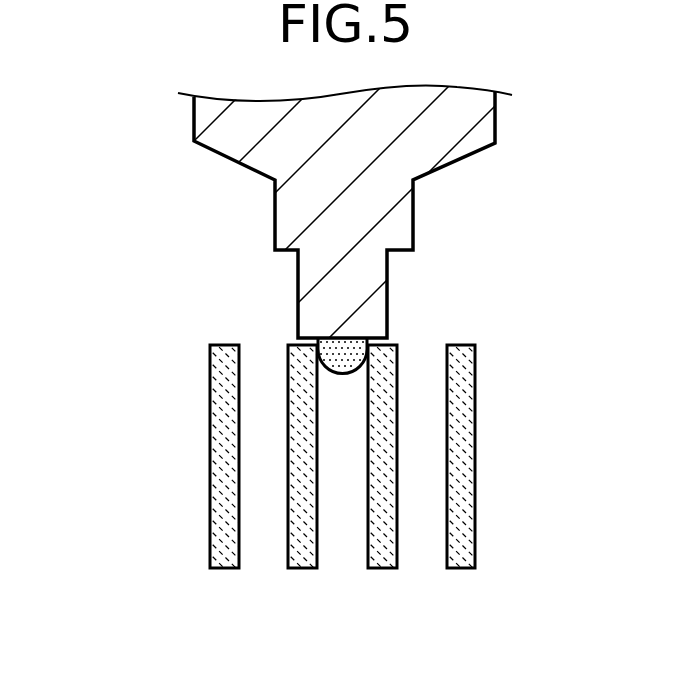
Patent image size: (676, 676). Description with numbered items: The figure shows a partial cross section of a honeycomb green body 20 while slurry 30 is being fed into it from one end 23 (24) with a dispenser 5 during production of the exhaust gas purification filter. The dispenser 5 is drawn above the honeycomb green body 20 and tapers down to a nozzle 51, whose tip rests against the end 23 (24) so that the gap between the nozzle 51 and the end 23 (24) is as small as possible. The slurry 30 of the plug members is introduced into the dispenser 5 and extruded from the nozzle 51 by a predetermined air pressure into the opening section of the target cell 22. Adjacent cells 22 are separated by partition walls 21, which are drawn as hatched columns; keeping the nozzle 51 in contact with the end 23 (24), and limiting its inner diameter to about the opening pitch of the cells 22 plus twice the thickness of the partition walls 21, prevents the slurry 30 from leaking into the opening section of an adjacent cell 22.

The dispenser 5 is at (292, 215).
The nozzle 51 is at (288, 357).
The slurry 30 is at (347, 357).
The honeycomb green body 20 is at (304, 466).
The cell 22 is at (262, 492).
The end 23 is at (258, 352).
The end 24 is at (112, 328).
The partition wall 21 is at (457, 568).